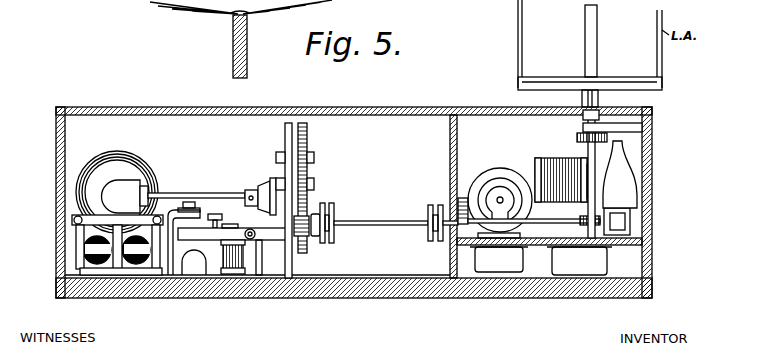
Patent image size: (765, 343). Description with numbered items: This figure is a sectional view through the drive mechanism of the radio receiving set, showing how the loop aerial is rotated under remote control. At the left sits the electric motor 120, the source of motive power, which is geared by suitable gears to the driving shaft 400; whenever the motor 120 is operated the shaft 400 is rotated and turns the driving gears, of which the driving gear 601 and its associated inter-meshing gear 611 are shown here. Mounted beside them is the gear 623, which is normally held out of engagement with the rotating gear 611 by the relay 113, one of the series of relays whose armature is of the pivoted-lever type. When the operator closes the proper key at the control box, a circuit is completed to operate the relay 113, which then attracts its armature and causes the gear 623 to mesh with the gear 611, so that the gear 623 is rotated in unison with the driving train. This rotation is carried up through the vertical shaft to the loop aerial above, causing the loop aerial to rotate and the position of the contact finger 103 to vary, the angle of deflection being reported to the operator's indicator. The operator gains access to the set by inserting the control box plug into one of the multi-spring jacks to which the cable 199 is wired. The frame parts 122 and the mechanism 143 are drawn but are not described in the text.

The cable 199 is at (234, 55).
The electric motor 120 is at (84, 175).
The magnet frame 122 is at (78, 250).
The driving shaft 400 is at (213, 195).
The lever mechanism 143 is at (265, 226).
The relay 113 is at (228, 279).
The driving gear 601 is at (308, 136).
The inter-meshing gear 611 is at (313, 190).
The gear 623 is at (304, 250).
The contact finger 103 is at (578, 138).